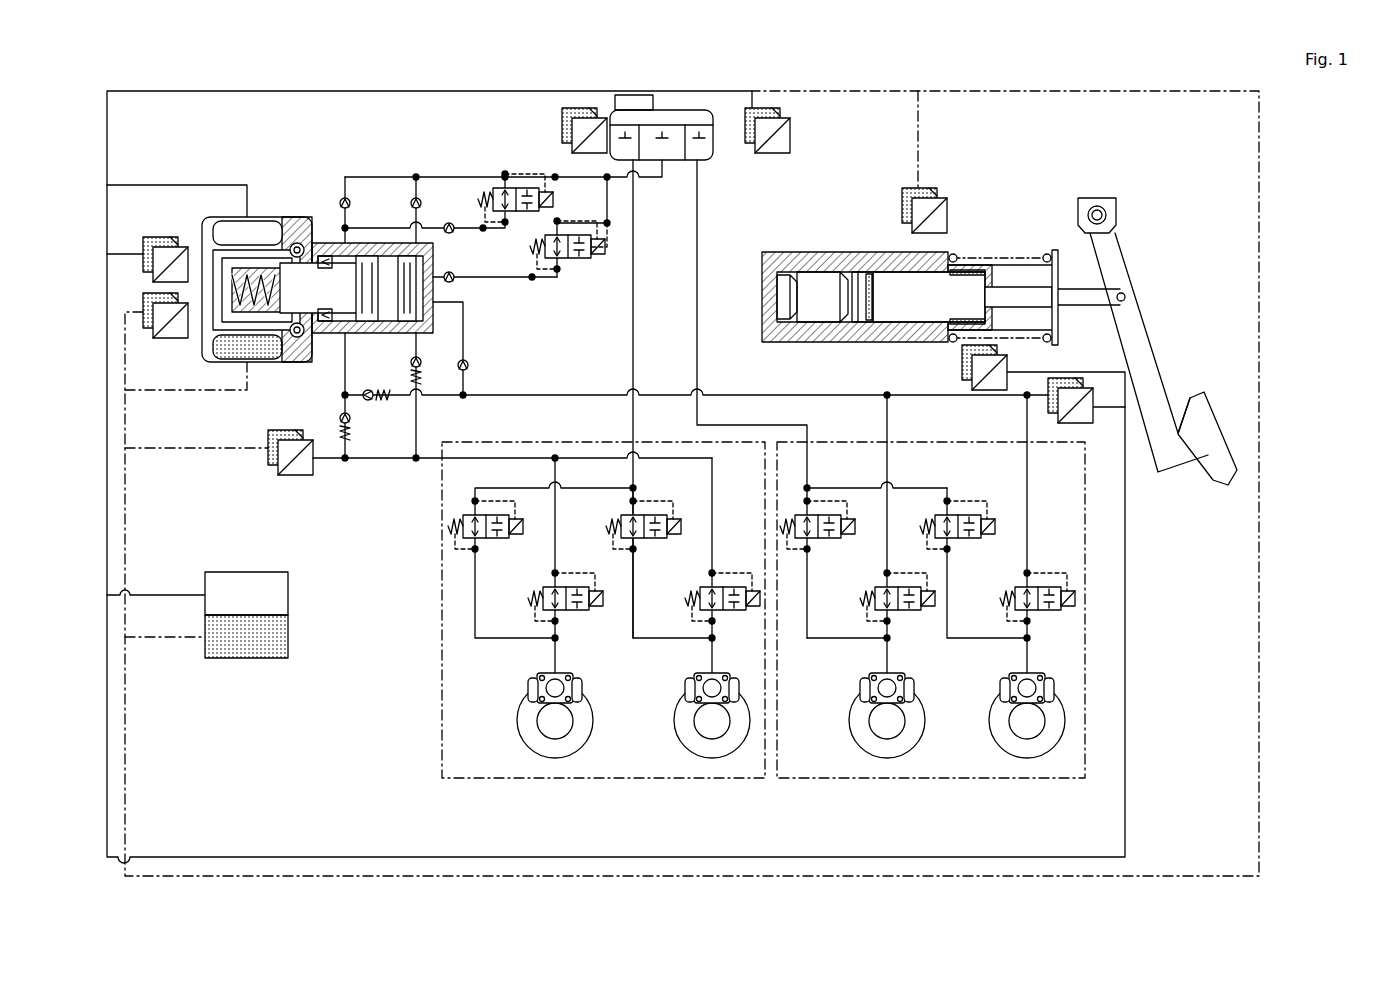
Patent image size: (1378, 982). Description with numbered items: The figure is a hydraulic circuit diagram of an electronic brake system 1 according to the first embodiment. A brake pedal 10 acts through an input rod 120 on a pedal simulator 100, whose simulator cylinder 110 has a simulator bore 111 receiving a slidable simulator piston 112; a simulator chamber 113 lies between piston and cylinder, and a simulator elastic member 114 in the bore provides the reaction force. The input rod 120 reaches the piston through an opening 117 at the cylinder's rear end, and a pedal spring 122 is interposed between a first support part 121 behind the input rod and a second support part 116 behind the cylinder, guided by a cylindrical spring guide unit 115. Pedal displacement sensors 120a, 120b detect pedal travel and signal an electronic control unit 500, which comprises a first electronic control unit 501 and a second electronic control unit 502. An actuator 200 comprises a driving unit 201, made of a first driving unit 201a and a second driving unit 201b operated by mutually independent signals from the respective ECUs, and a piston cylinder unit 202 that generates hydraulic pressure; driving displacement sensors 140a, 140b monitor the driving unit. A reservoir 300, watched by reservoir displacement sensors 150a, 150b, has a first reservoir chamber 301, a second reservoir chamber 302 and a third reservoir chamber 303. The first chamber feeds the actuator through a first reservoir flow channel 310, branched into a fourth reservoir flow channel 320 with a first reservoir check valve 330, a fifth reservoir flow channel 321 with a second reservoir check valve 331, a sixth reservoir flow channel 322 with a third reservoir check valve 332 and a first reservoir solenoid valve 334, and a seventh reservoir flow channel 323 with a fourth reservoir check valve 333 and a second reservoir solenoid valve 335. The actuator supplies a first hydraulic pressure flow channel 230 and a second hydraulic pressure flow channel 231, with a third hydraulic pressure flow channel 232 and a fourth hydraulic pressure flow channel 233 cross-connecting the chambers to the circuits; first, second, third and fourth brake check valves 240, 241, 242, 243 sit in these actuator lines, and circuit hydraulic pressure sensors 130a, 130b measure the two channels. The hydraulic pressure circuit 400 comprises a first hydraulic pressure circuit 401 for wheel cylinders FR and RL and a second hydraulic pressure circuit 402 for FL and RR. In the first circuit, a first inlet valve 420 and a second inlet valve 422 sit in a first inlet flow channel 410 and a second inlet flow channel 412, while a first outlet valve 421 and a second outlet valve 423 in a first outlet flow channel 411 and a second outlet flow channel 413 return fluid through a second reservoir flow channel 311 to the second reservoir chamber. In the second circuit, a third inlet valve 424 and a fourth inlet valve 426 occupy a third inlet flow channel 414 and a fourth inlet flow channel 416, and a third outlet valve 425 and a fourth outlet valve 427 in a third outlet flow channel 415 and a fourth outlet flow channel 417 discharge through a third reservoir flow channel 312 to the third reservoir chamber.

The electronic brake system 1 is at (481, 66).
The brake pedal 10 is at (1160, 335).
The pedal simulator 100 is at (811, 240).
The simulator cylinder 110 is at (788, 252).
The simulator bore 111 is at (863, 272).
The simulator piston 112 is at (892, 323).
The simulator chamber 113 is at (780, 323).
The simulator elastic member 114 is at (814, 323).
The spring guide unit 115 is at (980, 265).
The second support part 116 is at (950, 257).
The opening 117 is at (990, 316).
The input rod 120 is at (1010, 287).
The first support part 121 is at (1062, 262).
The pedal spring 122 is at (1053, 250).
The pedal displacement sensor 120a is at (1006, 357).
The pedal displacement sensor 120b is at (910, 188).
The first circuit hydraulic pressure sensor 130a is at (1090, 426).
The second circuit hydraulic pressure sensor 130b is at (293, 478).
The driving displacement sensor 140a is at (165, 237).
The driving displacement sensor 140b is at (176, 342).
The reservoir displacement sensor 150a is at (562, 125).
The reservoir displacement sensor 150b is at (780, 125).
The actuator 200 is at (270, 188).
The driving unit 201 is at (210, 220).
The first driving unit 201a is at (228, 215).
The second driving unit 201b is at (252, 368).
The piston cylinder unit 202 is at (330, 240).
The first hydraulic pressure flow channel 230 is at (464, 333).
The second hydraulic pressure flow channel 231 is at (346, 380).
The third hydraulic pressure flow channel 232 is at (416, 400).
The fourth hydraulic pressure flow channel 233 is at (396, 398).
The first brake check valve 240 is at (470, 365).
The second brake check valve 241 is at (340, 420).
The third brake check valve 242 is at (418, 363).
The fourth brake check valve 243 is at (368, 402).
The reservoir 300 is at (603, 100).
The first reservoir chamber 301 is at (664, 130).
The second reservoir chamber 302 is at (700, 130).
The third reservoir chamber 303 is at (624, 122).
The first reservoir flow channel 310 is at (652, 180).
The second reservoir flow channel 311 is at (697, 250).
The third reservoir flow channel 312 is at (633, 345).
The fourth reservoir flow channel 320 is at (420, 176).
The fifth reservoir flow channel 321 is at (366, 176).
The sixth reservoir flow channel 322 is at (605, 200).
The seventh reservoir flow channel 323 is at (484, 231).
The first reservoir check valve 330 is at (421, 203).
The second reservoir check valve 331 is at (352, 203).
The third reservoir check valve 332 is at (455, 279).
The fourth reservoir check valve 333 is at (449, 233).
The first reservoir solenoid valve 334 is at (584, 259).
The second reservoir solenoid valve 335 is at (520, 188).
The hydraulic pressure circuit 400 is at (836, 818).
The first hydraulic pressure circuit 401 is at (812, 780).
The second hydraulic pressure circuit 402 is at (745, 780).
The first inlet flow channel 410 is at (1028, 535).
The first outlet flow channel 411 is at (948, 605).
The second inlet flow channel 412 is at (889, 508).
The second outlet flow channel 413 is at (808, 605).
The third inlet flow channel 414 is at (714, 535).
The third outlet flow channel 415 is at (634, 605).
The fourth inlet flow channel 416 is at (557, 535).
The fourth outlet flow channel 417 is at (476, 605).
The first inlet valve 420 is at (1055, 611).
The first outlet valve 421 is at (980, 539).
The second inlet valve 422 is at (915, 611).
The second outlet valve 423 is at (840, 539).
The third inlet valve 424 is at (742, 611).
The third outlet valve 425 is at (662, 539).
The fourth inlet valve 426 is at (586, 611).
The fourth outlet valve 427 is at (506, 539).
The electronic control unit 500 is at (340, 588).
The first electronic control unit 501 is at (292, 597).
The second electronic control unit 502 is at (292, 640).